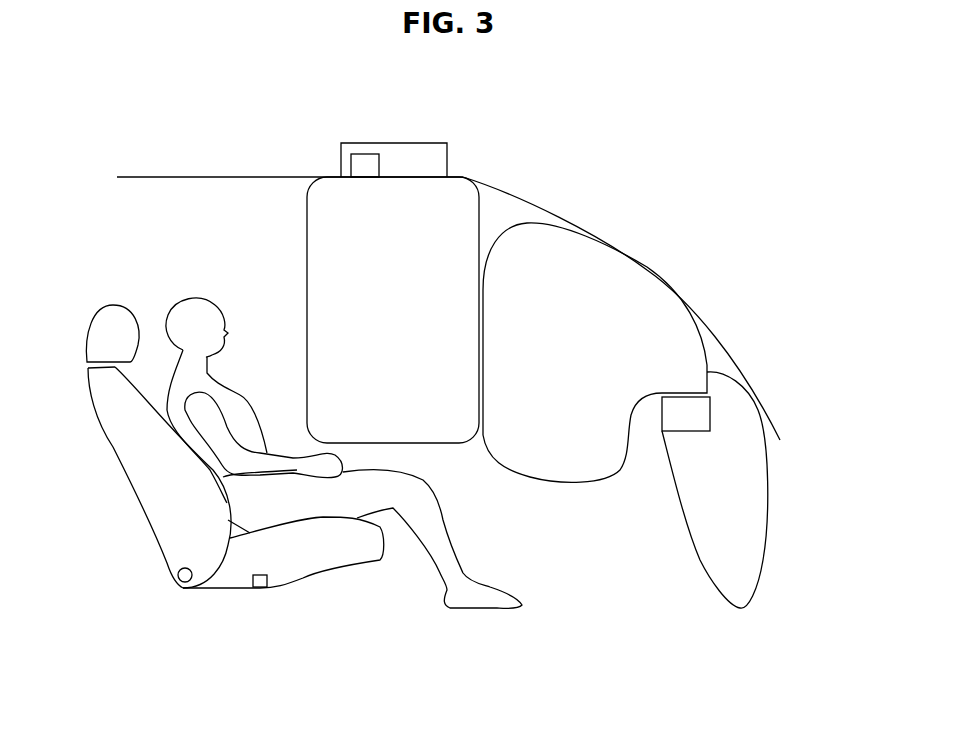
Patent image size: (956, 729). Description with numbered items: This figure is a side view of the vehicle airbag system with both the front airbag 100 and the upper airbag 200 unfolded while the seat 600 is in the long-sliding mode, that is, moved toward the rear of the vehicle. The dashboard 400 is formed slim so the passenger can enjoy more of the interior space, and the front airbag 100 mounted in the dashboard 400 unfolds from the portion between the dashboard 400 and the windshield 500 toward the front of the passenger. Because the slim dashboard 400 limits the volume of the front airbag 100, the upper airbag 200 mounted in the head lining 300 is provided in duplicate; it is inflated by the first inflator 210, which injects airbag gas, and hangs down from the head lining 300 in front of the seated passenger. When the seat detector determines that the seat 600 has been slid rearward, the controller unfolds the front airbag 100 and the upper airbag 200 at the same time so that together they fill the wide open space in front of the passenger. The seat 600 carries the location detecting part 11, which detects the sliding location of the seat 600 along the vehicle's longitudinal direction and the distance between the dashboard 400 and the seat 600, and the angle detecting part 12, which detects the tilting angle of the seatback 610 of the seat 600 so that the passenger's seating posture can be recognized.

The front airbag 100 is at (577, 255).
The upper airbag 200 is at (458, 212).
The first inflator 210 is at (363, 160).
The head lining 300 is at (152, 177).
The dashboard 400 is at (753, 495).
The windshield 500 is at (687, 298).
The seat 600 is at (203, 500).
The seatback 610 is at (137, 465).
The location detecting part 11 is at (258, 583).
The angle detecting part 12 is at (167, 575).